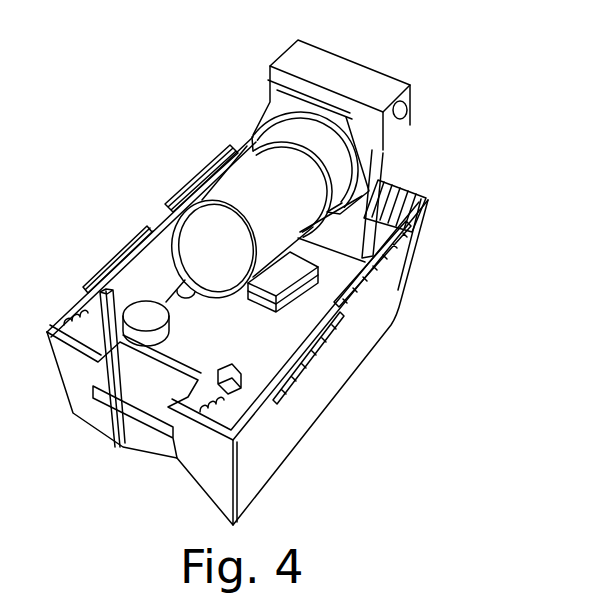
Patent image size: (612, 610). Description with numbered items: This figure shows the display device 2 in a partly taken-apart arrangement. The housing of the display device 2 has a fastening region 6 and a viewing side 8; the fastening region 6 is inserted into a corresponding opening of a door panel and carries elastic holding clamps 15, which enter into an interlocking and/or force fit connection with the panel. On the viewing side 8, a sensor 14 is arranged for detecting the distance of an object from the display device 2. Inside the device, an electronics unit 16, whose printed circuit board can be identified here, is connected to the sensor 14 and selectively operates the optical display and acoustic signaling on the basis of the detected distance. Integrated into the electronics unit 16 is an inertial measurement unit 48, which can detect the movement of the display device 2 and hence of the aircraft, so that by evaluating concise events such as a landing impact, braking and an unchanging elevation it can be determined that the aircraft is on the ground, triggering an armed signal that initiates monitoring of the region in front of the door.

The display device 2 is at (137, 178).
The fastening region 6 is at (237, 331).
The viewing side 8 is at (453, 143).
The sensor 14 is at (283, 84).
The elastic holding clamps 15 is at (123, 447).
The electronics unit 16 is at (241, 343).
The inertial measurement unit 48 is at (318, 292).